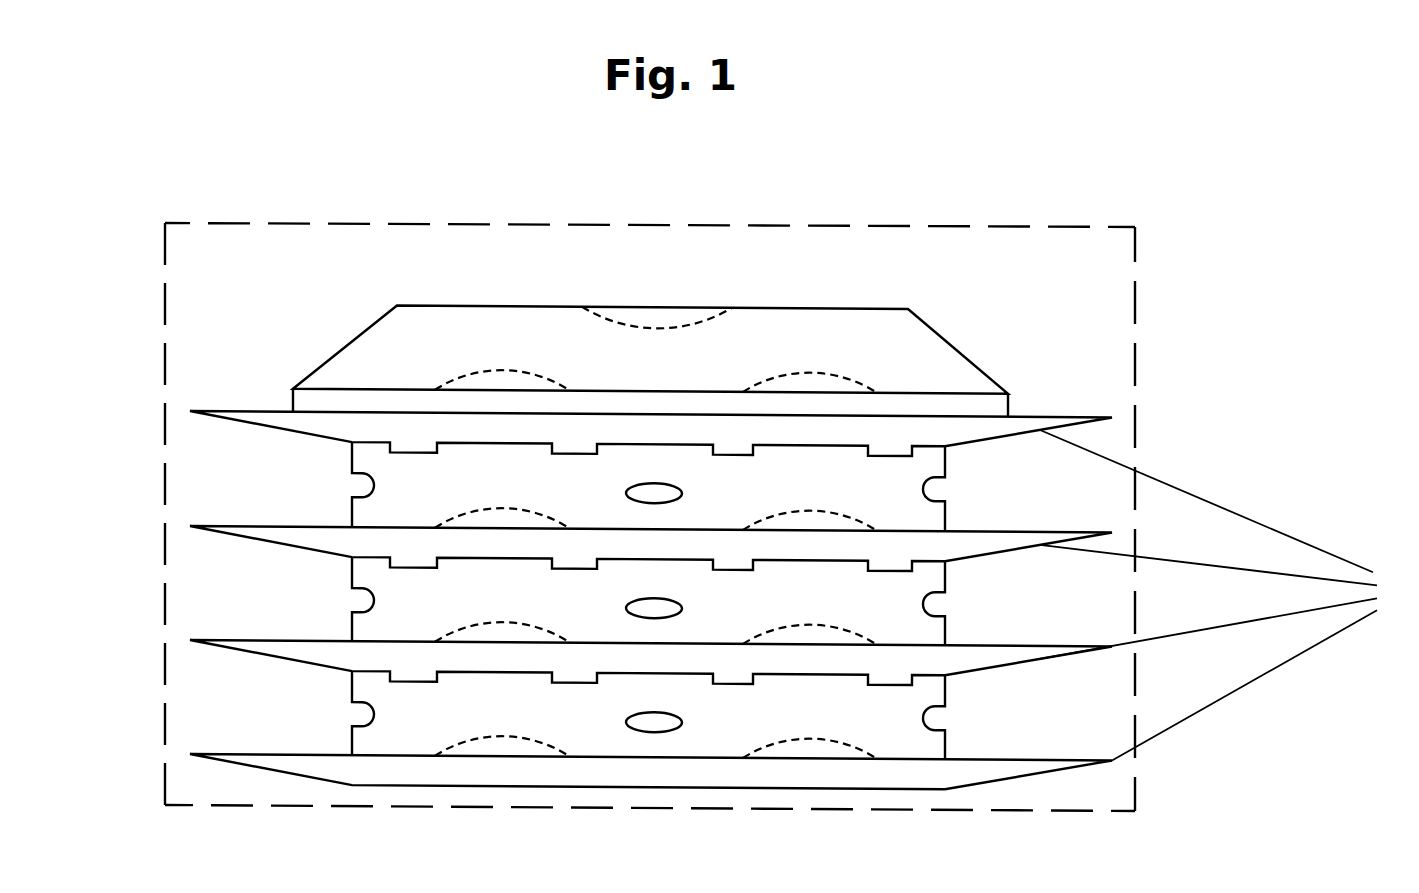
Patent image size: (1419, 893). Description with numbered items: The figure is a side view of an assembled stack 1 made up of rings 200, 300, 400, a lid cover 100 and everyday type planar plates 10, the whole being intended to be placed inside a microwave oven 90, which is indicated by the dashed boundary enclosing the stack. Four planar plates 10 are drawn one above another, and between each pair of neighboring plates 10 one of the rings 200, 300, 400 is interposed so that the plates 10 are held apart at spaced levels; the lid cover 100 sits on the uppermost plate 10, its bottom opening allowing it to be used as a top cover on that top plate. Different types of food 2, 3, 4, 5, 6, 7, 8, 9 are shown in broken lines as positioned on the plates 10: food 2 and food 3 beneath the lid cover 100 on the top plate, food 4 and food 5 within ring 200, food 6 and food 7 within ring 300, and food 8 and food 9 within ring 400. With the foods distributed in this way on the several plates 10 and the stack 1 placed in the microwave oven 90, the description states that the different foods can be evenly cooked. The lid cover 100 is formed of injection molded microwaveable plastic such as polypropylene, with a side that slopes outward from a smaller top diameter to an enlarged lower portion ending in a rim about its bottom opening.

The assembled stack 1 is at (331, 205).
The microwave oven 90 is at (1135, 247).
The lid cover 100 is at (650, 330).
The food 2 is at (520, 378).
The food 3 is at (808, 375).
The planar plates 10 is at (804, 601).
The ring 200 is at (648, 486).
The food 4 is at (502, 515).
The food 5 is at (815, 519).
The ring 300 is at (648, 601).
The food 6 is at (497, 632).
The food 7 is at (818, 632).
The ring 400 is at (648, 715).
The food 8 is at (507, 745).
The food 9 is at (818, 743).